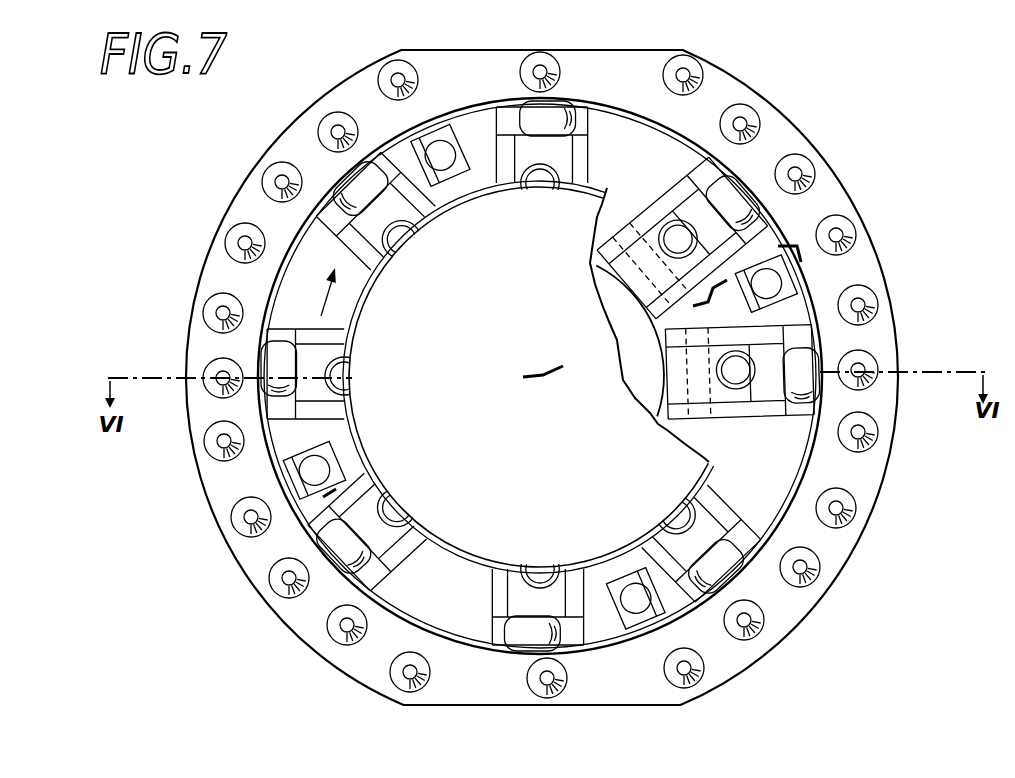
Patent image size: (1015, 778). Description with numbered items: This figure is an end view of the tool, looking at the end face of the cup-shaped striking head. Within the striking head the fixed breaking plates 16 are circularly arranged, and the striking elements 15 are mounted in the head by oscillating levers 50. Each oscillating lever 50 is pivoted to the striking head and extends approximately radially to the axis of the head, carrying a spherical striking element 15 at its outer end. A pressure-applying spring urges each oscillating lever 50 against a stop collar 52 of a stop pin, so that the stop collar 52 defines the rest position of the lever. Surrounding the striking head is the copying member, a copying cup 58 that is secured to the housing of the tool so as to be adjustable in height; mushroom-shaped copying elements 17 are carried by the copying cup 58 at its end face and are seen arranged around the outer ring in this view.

The striking element 15 is at (550, 112).
The fixed breaking plate 16 is at (427, 143).
The copying element 17 is at (532, 63).
The oscillating lever 50 is at (378, 233).
The stop collar 52 is at (678, 236).
The copying cup 58 is at (822, 194).